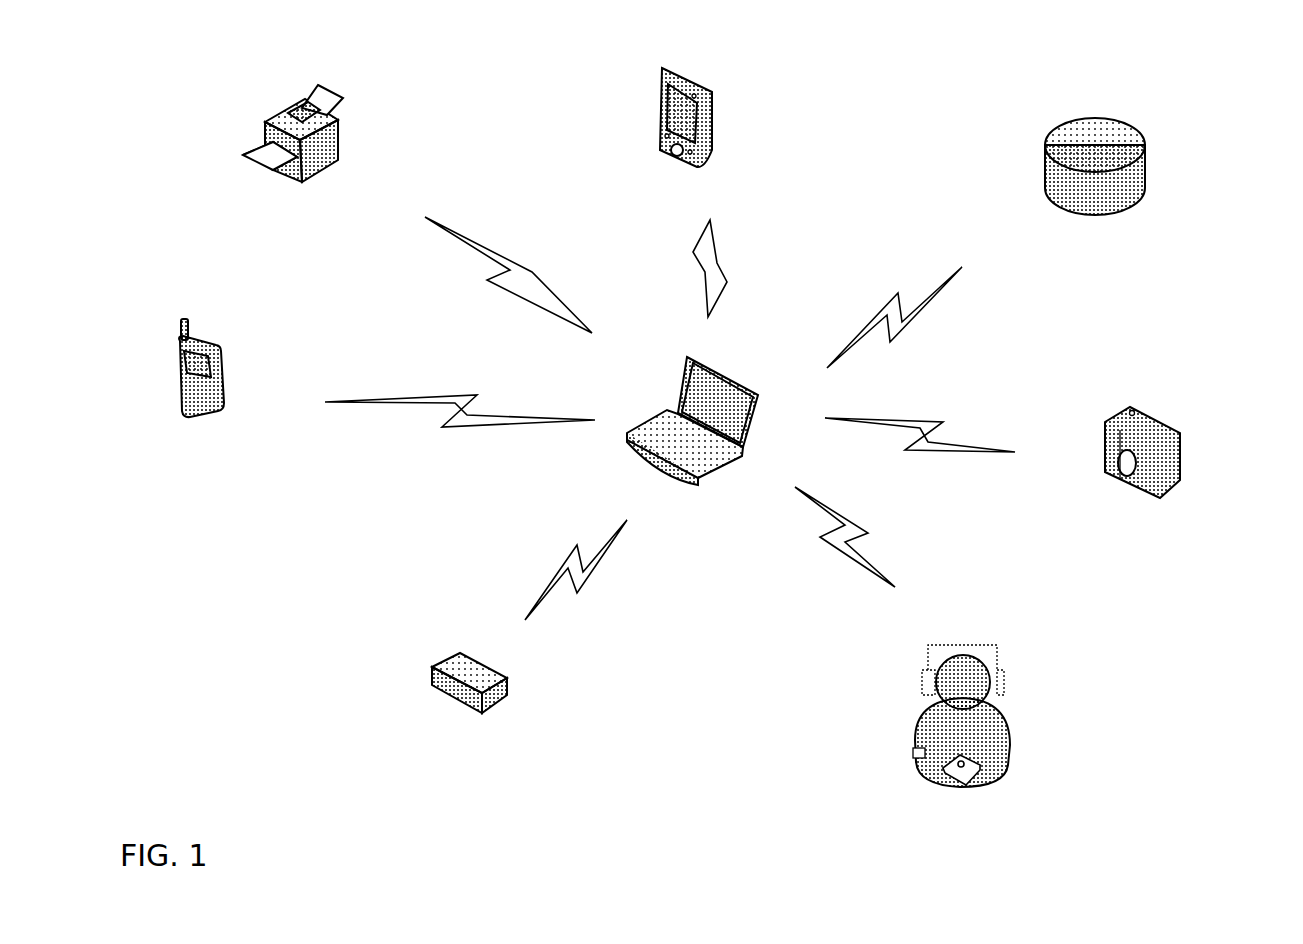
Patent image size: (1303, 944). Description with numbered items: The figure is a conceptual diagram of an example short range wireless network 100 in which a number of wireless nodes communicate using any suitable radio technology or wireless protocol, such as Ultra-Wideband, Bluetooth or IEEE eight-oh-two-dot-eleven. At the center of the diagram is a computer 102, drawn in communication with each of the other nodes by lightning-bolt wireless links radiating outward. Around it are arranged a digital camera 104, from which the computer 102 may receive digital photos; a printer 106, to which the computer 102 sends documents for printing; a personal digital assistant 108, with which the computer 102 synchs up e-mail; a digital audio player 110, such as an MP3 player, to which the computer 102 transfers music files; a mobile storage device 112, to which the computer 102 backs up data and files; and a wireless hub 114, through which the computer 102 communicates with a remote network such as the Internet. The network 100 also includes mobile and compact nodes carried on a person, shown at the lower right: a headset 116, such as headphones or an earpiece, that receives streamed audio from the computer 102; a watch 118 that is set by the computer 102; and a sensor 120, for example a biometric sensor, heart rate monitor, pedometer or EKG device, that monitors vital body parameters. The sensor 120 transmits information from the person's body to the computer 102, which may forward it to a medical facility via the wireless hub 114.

The network 100 is at (707, 403).
The computer 102 is at (668, 395).
The digital camera 104 is at (1183, 462).
The printer 106 is at (343, 152).
The personal digital assistant (PDA) 108 is at (227, 380).
The digital audio player 110 is at (717, 113).
The mobile storage device 112 is at (1147, 185).
The wireless hub 114 is at (510, 678).
The headset 116 is at (998, 642).
The watch 118 is at (912, 753).
The sensor 120 is at (1012, 772).